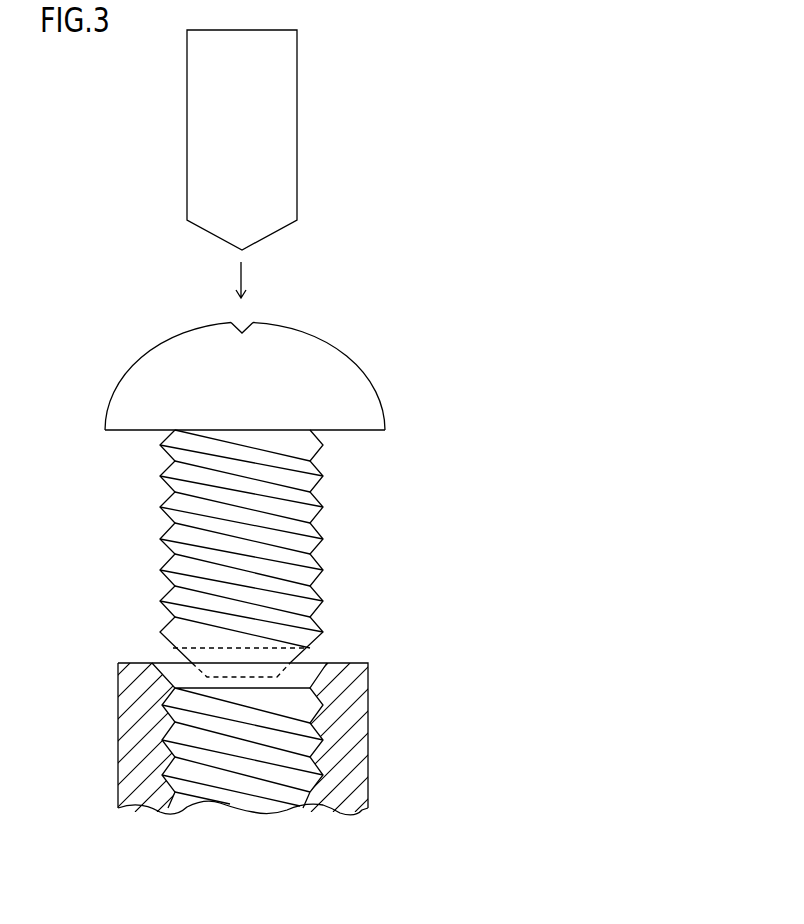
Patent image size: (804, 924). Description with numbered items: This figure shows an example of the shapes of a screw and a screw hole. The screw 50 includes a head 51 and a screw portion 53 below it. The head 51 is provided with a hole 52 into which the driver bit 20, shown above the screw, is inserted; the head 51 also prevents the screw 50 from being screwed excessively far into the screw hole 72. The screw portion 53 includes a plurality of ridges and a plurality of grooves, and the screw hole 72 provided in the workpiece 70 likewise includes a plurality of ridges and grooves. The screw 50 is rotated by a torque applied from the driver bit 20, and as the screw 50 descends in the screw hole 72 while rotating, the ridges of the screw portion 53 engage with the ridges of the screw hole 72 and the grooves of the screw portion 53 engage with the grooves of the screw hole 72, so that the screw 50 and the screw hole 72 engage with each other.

The driver bit 20 is at (291, 167).
The screw 50 is at (343, 475).
The head 51 is at (309, 352).
The hole 52 is at (252, 319).
The screw portion 53 is at (337, 553).
The workpiece 70 is at (144, 788).
The screw hole 72 is at (232, 810).